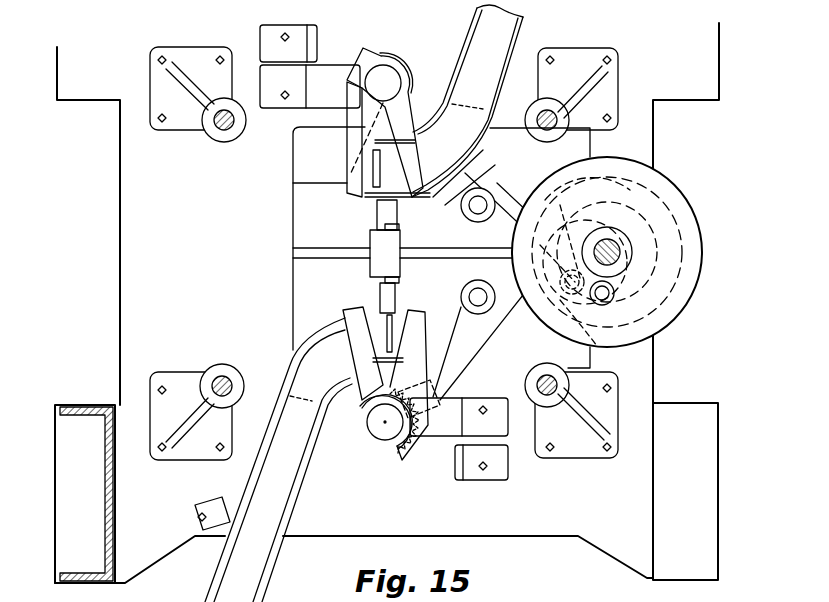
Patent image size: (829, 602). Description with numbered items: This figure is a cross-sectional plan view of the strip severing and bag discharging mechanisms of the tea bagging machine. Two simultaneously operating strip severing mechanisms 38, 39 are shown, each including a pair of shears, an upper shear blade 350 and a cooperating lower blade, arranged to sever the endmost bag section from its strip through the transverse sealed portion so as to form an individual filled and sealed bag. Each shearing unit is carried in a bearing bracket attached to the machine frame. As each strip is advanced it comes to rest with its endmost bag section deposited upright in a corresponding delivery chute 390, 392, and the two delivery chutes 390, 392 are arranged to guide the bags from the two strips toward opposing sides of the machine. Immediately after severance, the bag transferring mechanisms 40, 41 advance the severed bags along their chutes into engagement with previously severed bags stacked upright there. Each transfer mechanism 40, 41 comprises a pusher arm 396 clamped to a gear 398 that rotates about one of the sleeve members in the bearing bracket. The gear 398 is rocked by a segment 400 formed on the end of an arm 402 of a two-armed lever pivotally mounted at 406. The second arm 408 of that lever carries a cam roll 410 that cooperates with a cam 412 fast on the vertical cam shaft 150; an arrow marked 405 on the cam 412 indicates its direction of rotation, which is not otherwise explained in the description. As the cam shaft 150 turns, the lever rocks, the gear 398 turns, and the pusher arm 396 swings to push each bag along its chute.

The strip severing mechanism 38 is at (385, 383).
The strip severing mechanism 39 is at (405, 103).
The bag transferring mechanism 40 is at (375, 330).
The bag transferring mechanism 41 is at (343, 152).
The vertical cam shaft 150 is at (618, 250).
The upper shear blade 350 is at (293, 183).
The delivery chute 390 is at (246, 481).
The delivery chute 392 is at (510, 40).
The pusher arm 396 is at (395, 205).
The gear 398 is at (427, 447).
The segment 400 is at (443, 400).
The arm of two-armed lever 402 is at (483, 160).
The direction of rotation 405 is at (546, 196).
The pivot of two-armed lever 406 is at (480, 203).
The second arm of two-armed lever 408 is at (588, 338).
The cam roll 410 is at (605, 305).
The cam 412 is at (687, 293).